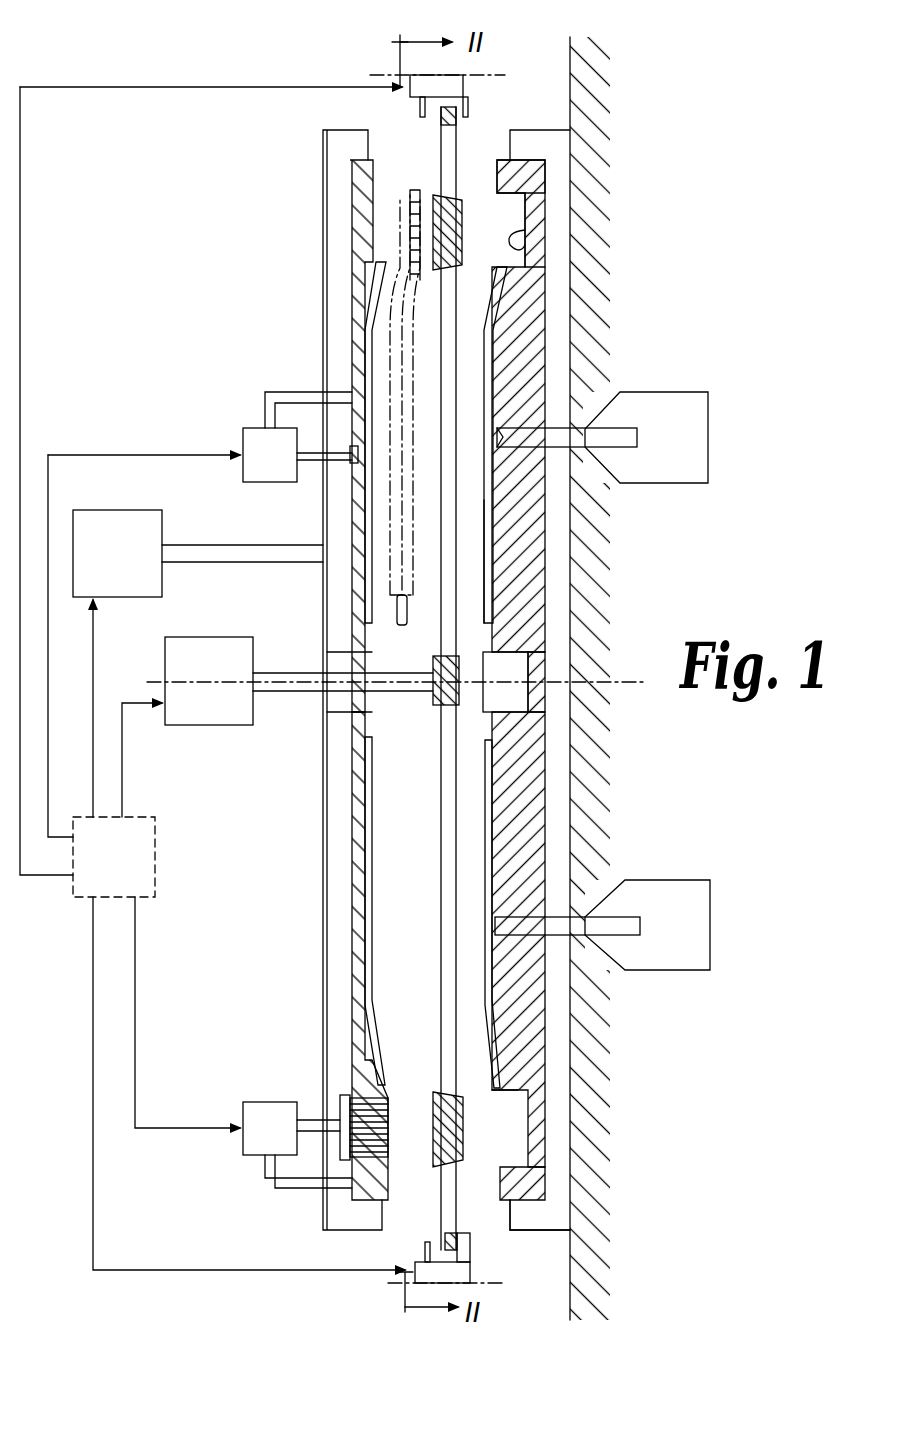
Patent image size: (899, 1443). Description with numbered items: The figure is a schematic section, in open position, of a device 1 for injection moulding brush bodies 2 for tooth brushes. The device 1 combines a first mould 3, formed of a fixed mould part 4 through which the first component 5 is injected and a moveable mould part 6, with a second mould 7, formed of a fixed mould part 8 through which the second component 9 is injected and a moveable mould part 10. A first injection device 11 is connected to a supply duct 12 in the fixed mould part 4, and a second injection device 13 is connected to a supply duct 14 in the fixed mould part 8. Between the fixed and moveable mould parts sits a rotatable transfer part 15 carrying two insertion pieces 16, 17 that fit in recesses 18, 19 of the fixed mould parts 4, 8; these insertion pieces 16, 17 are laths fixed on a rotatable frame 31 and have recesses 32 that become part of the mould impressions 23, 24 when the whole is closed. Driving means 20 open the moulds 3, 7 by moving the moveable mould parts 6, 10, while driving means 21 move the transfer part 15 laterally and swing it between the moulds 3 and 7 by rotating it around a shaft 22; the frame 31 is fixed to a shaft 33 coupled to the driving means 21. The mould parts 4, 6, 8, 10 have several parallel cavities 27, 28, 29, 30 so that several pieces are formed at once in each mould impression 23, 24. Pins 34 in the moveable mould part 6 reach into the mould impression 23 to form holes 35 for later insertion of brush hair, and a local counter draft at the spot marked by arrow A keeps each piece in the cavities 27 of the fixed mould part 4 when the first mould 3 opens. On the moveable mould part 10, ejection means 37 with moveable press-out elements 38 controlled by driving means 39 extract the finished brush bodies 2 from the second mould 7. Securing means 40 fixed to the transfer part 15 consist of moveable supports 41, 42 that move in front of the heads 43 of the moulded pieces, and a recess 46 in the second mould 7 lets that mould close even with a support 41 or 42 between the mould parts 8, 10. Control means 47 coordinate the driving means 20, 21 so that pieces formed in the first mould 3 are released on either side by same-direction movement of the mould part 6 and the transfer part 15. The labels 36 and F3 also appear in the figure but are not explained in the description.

The device 1 is at (722, 90).
The brush bodies 2 is at (400, 330).
The first mould 3 is at (637, 971).
The fixed mould part 4 is at (525, 818).
The first component 5 is at (642, 919).
The moveable mould part 6 is at (352, 820).
The second mould 7 is at (604, 379).
The fixed mould part 8 is at (517, 540).
The second component 9 is at (612, 440).
The moveable mould part 10 is at (353, 208).
The first injection device 11 is at (712, 926).
The supply duct 12 is at (562, 925).
The second injection device 13 is at (712, 432).
The supply duct 14 is at (553, 430).
The transfer part 15 is at (483, 126).
The insertion piece 16 is at (502, 1133).
The insertion piece 17 is at (445, 238).
The recess 18 is at (510, 1158).
The recess 19 is at (500, 215).
The driving means 20 is at (110, 530).
The driving means 21 is at (196, 655).
The shaft 22 is at (155, 682).
The mould impression 23 is at (502, 784).
The mould impression 24 is at (502, 562).
The cavities 27 is at (505, 1055).
The cavities 28 is at (375, 915).
The cavities 29 is at (500, 382).
The cavities 30 is at (375, 375).
The rotatable frame 31 is at (447, 748).
The recesses 32 is at (445, 235).
The shaft 33 is at (283, 676).
The pins 34 is at (368, 1098).
The holes 35 is at (406, 211).
The lower supply unit 36 is at (243, 1140).
The ejection means 37 is at (266, 497).
The press-out elements 38 is at (330, 468).
The driving means 39 is at (258, 445).
The securing means 40 is at (351, 60).
The moveable support 41 is at (422, 1247).
The moveable support 42 is at (418, 100).
The heads 43 is at (420, 188).
The recess 46 is at (388, 184).
The control means 47 is at (150, 858).
The arrow A is at (492, 858).
The force F3 is at (361, 76).